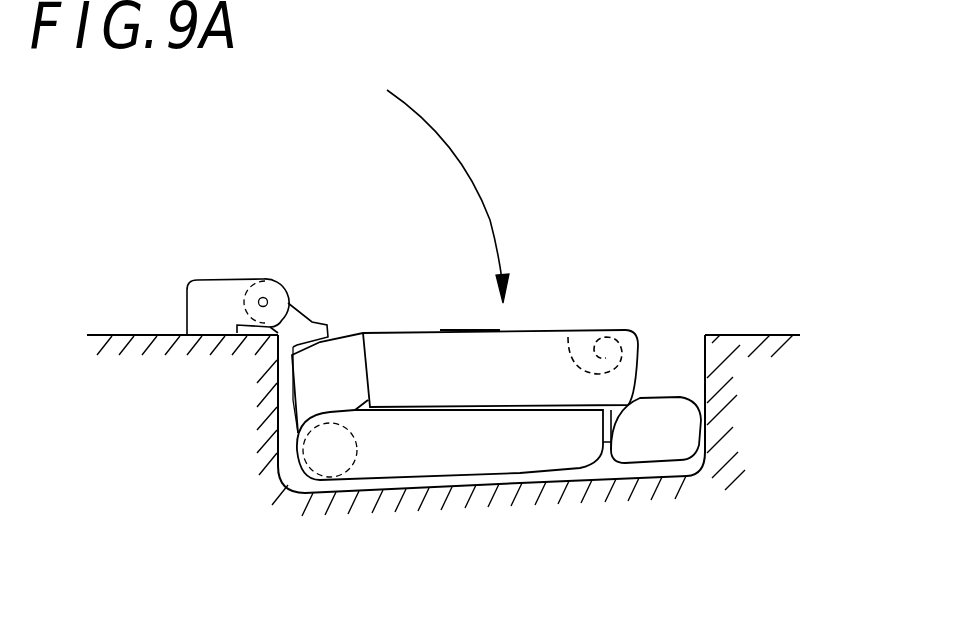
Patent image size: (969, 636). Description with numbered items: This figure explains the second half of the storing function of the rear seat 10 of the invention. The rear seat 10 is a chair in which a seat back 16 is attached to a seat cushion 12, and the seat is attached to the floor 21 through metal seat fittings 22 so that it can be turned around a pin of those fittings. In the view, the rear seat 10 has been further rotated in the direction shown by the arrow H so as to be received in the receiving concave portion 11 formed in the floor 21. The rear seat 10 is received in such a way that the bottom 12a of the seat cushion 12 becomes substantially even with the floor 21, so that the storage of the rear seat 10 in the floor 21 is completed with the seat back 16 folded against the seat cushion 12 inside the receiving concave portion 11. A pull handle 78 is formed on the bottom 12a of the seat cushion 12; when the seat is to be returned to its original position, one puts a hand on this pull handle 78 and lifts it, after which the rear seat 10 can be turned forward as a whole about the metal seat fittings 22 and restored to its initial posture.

The rear seat 10 is at (590, 252).
The receiving concave portion 11 is at (697, 387).
The seat cushion 12 is at (426, 357).
The bottom of the seat cushion 12a is at (470, 330).
The seat back 16 is at (533, 483).
The floor 21 is at (133, 333).
The metal seat fittings 22 is at (233, 279).
The pull handle 78 is at (600, 335).
The arrow H is at (448, 196).